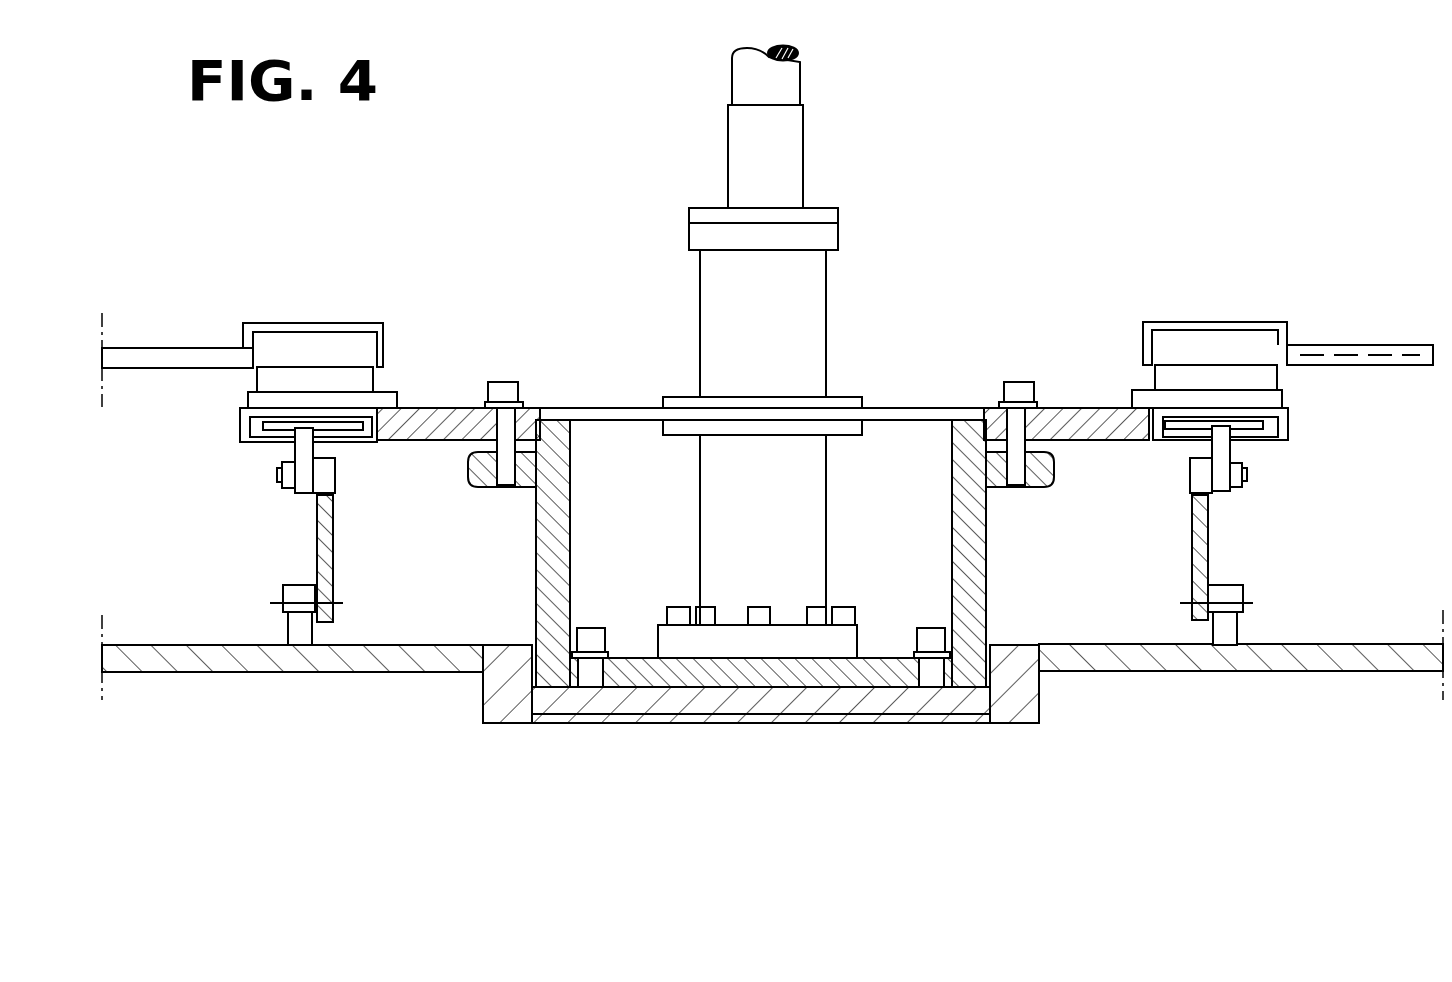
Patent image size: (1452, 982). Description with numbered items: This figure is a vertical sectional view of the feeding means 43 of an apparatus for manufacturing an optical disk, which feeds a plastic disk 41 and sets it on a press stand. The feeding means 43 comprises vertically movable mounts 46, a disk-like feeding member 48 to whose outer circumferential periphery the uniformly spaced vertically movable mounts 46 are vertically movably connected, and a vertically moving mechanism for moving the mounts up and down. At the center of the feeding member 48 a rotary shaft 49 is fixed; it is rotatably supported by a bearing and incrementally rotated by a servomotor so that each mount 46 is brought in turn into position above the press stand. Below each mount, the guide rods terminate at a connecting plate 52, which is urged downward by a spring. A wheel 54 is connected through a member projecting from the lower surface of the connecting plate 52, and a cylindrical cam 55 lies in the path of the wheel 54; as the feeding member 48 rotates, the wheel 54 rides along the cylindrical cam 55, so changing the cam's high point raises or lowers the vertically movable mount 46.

The plastic disk 41 is at (1370, 350).
The feeding means 43 is at (1140, 282).
The vertically movable mount 46 is at (216, 352).
The feeding member 48 is at (430, 408).
The rotary shaft 49 is at (817, 343).
The connecting plate 52 is at (280, 431).
The wheel 54 is at (330, 478).
The cylindrical cam 55 is at (317, 547).